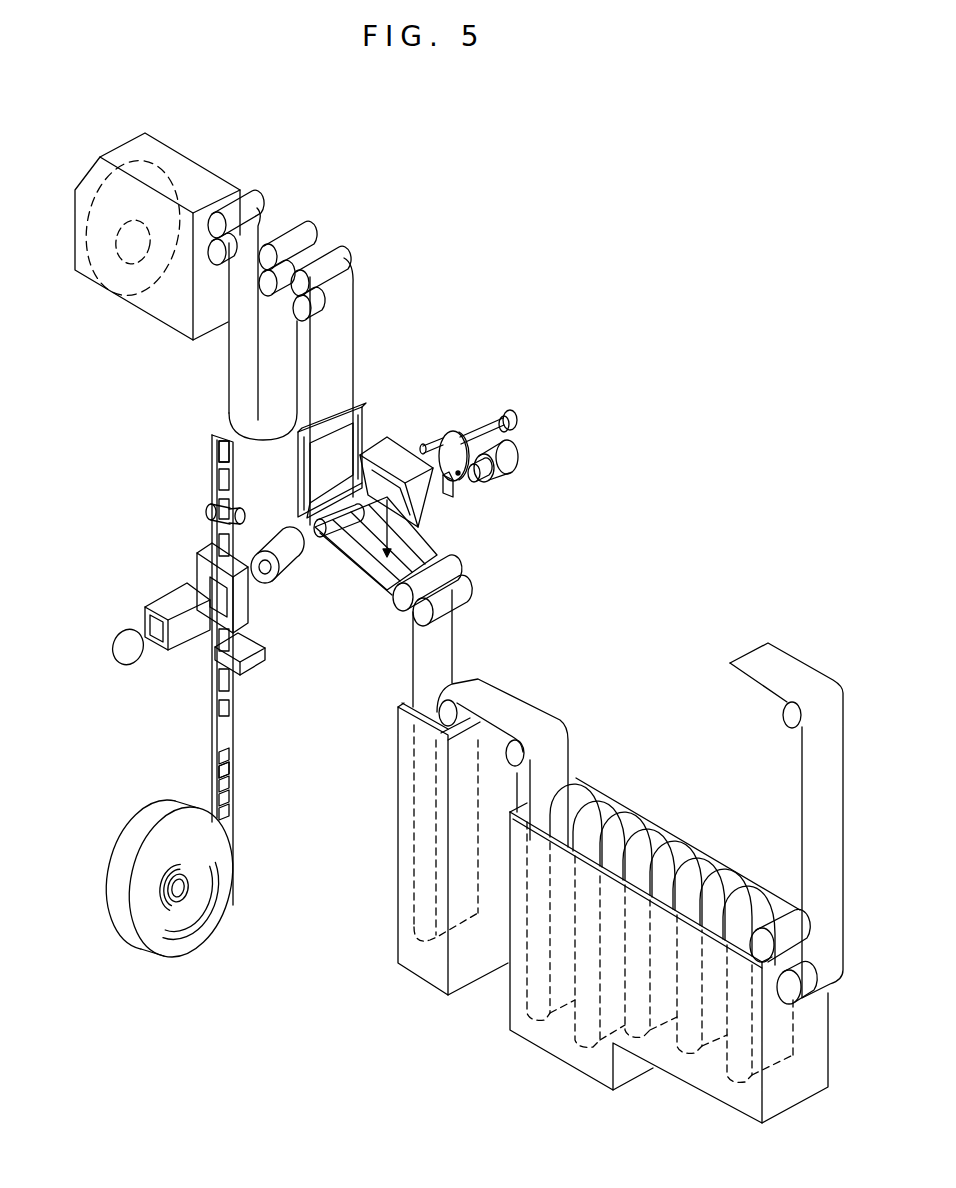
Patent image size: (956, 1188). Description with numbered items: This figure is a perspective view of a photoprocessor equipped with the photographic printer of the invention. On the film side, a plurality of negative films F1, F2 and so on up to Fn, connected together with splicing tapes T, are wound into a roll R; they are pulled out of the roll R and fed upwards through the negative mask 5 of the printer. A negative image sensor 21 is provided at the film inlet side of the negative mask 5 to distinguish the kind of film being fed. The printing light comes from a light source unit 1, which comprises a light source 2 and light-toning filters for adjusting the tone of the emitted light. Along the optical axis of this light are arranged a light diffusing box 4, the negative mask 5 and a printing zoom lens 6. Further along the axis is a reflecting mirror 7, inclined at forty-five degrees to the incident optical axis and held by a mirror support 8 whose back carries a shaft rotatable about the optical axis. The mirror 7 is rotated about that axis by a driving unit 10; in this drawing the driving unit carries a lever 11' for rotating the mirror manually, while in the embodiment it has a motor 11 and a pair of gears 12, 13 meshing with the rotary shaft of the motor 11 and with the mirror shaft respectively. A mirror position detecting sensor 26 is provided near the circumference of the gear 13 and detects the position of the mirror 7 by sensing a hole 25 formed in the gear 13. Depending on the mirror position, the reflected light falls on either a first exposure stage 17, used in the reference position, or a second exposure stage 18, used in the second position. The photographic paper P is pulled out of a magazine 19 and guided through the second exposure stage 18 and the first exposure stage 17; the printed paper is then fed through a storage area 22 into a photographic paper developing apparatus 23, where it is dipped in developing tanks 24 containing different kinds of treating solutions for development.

The magazine 19 is at (183, 152).
The photographic paper P is at (340, 322).
The second exposure stage 18 is at (298, 467).
The mirror support 8 is at (380, 448).
The reflecting mirror 7 is at (387, 482).
The first exposure stage 17 is at (373, 583).
The gear 13 is at (455, 431).
The lever 11' is at (478, 397).
The driving unit 10 is at (520, 438).
The motor 11 is at (537, 458).
The gear 12 is at (483, 478).
The hole 25 is at (462, 474).
The mirror position detecting sensor 26 is at (453, 494).
The printing zoom lens 6 is at (287, 567).
The splicing tape T is at (212, 728).
The negative film F1 is at (212, 462).
The negative film F2 is at (212, 777).
The negative mask 5 is at (197, 567).
The light diffusing box 4 is at (168, 597).
The light source 2 is at (118, 638).
The light source unit 1 is at (110, 665).
The negative image sensor 21 is at (253, 662).
The roll R is at (130, 940).
The negative film Fn is at (190, 890).
The storage area 22 is at (397, 902).
The photographic paper developing apparatus 23 is at (629, 781).
The developing tanks 24 is at (628, 812).